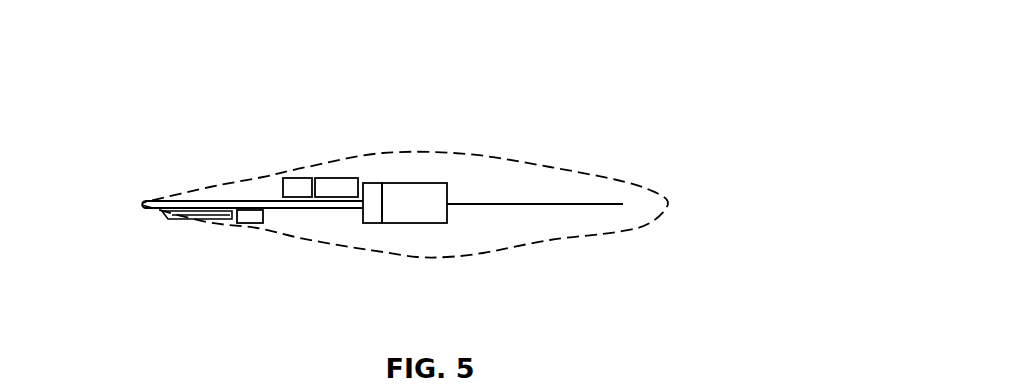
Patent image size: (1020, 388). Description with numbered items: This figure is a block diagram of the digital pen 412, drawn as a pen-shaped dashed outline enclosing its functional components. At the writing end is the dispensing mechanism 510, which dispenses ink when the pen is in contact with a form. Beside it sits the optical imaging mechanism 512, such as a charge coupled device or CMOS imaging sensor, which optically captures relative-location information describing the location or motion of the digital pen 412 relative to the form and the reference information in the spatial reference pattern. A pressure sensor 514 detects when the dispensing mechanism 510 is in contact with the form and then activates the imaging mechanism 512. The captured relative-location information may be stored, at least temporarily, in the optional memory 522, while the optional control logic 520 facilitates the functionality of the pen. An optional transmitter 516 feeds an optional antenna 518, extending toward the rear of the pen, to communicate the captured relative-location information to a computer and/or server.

The digital pen 412 is at (664, 65).
The dispensing mechanism 510 is at (207, 201).
The optical imaging mechanism 512 is at (247, 224).
The pressure sensor 514 is at (373, 223).
The transmitter 516 is at (413, 223).
The antenna 518 is at (543, 203).
The control logic 520 is at (333, 177).
The memory 522 is at (300, 177).